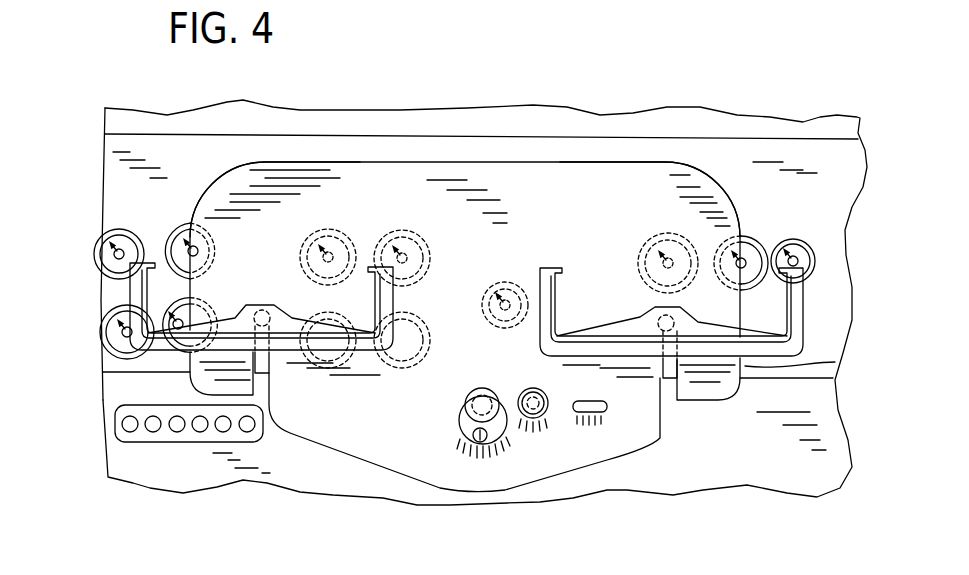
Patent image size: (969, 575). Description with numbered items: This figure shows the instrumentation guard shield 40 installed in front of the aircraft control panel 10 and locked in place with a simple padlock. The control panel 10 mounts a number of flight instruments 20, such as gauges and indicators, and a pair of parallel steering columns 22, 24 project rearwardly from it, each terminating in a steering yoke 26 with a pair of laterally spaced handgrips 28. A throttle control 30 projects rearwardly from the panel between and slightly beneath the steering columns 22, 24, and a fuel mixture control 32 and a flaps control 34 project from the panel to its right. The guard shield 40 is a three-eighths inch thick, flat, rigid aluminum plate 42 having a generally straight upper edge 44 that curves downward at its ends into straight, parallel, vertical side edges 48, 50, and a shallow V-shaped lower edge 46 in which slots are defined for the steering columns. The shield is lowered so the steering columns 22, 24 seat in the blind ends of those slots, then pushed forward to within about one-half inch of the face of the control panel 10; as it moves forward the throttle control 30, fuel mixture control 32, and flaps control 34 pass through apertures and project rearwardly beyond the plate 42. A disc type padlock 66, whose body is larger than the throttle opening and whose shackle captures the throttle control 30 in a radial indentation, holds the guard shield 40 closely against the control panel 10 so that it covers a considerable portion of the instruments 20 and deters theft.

The control panel 10 is at (787, 158).
The flight instruments 20 is at (340, 228).
The steering column 22 is at (259, 308).
The steering column 24 is at (643, 308).
The steering yoke 26 is at (286, 360).
The handgrips 28 is at (130, 293).
The throttle control 30 is at (466, 409).
The fuel mixture control 32 is at (543, 420).
The flaps control 34 is at (613, 407).
The instrumentation guard shield 40 is at (584, 156).
The aluminum plate 42 is at (325, 192).
The upper edge 44 is at (513, 163).
The lower edge 46 is at (378, 468).
The side edge 48 is at (178, 320).
The side edge 50 is at (835, 362).
The disc type padlock 66 is at (452, 428).